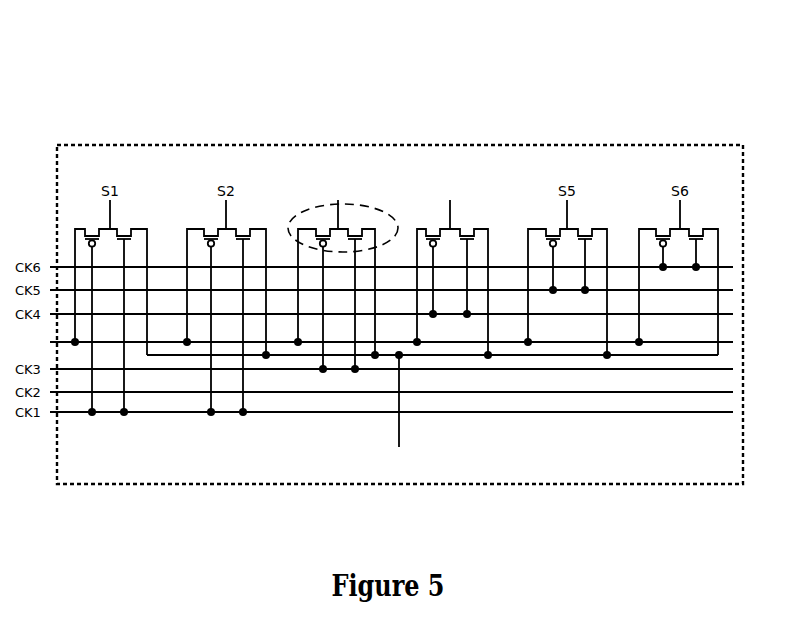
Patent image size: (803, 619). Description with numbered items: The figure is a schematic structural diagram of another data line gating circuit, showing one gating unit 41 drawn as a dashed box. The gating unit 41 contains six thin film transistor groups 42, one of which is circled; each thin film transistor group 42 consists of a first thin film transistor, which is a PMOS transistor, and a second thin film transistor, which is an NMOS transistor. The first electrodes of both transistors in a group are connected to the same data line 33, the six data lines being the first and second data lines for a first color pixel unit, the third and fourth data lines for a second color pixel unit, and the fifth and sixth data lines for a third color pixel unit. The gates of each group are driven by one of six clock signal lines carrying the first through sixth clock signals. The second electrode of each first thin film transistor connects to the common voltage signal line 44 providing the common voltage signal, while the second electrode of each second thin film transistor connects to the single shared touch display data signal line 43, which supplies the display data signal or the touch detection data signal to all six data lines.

The gating unit 41 is at (230, 146).
The thin film transistor group 42 is at (387, 212).
The data line 33 is at (450, 228).
The touch display data signal line 43 is at (402, 430).
The common voltage signal line 44 is at (162, 342).